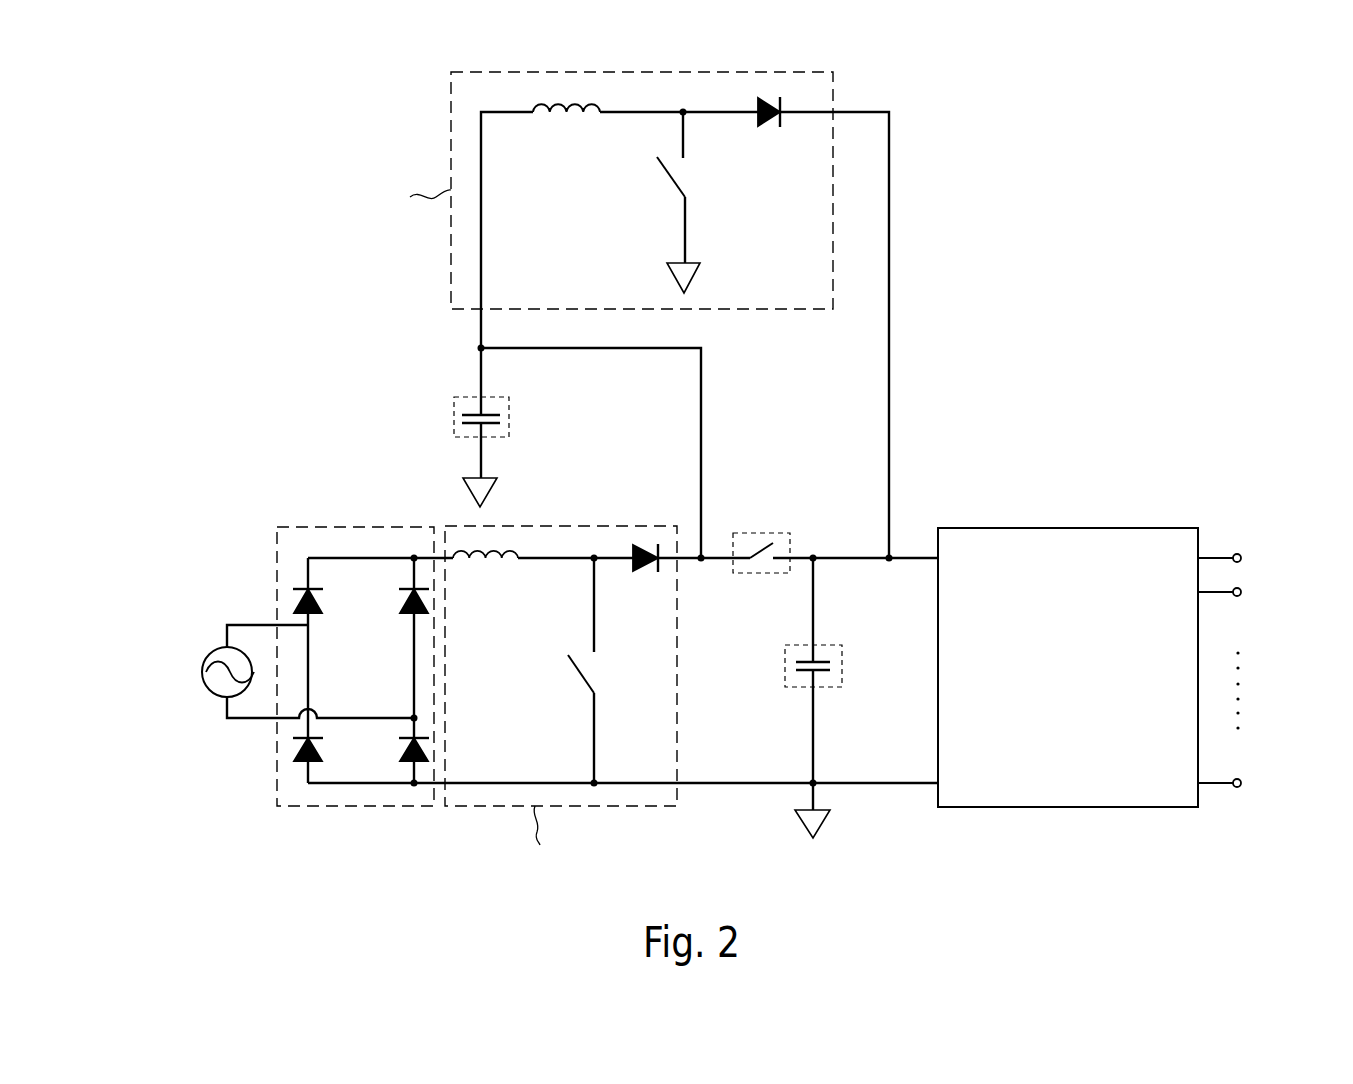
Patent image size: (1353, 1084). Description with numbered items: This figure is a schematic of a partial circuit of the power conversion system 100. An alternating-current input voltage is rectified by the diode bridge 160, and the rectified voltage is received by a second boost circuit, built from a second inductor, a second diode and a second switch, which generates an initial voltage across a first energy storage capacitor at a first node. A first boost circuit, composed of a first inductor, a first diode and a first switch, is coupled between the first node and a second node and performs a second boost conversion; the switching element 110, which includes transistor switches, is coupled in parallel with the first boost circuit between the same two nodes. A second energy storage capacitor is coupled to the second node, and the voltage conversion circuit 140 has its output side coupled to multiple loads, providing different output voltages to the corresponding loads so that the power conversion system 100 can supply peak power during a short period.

The power conversion system 100 is at (145, 70).
The switching element 110 is at (773, 535).
The voltage conversion circuit 140 is at (1060, 528).
The diode bridge 160 is at (277, 562).